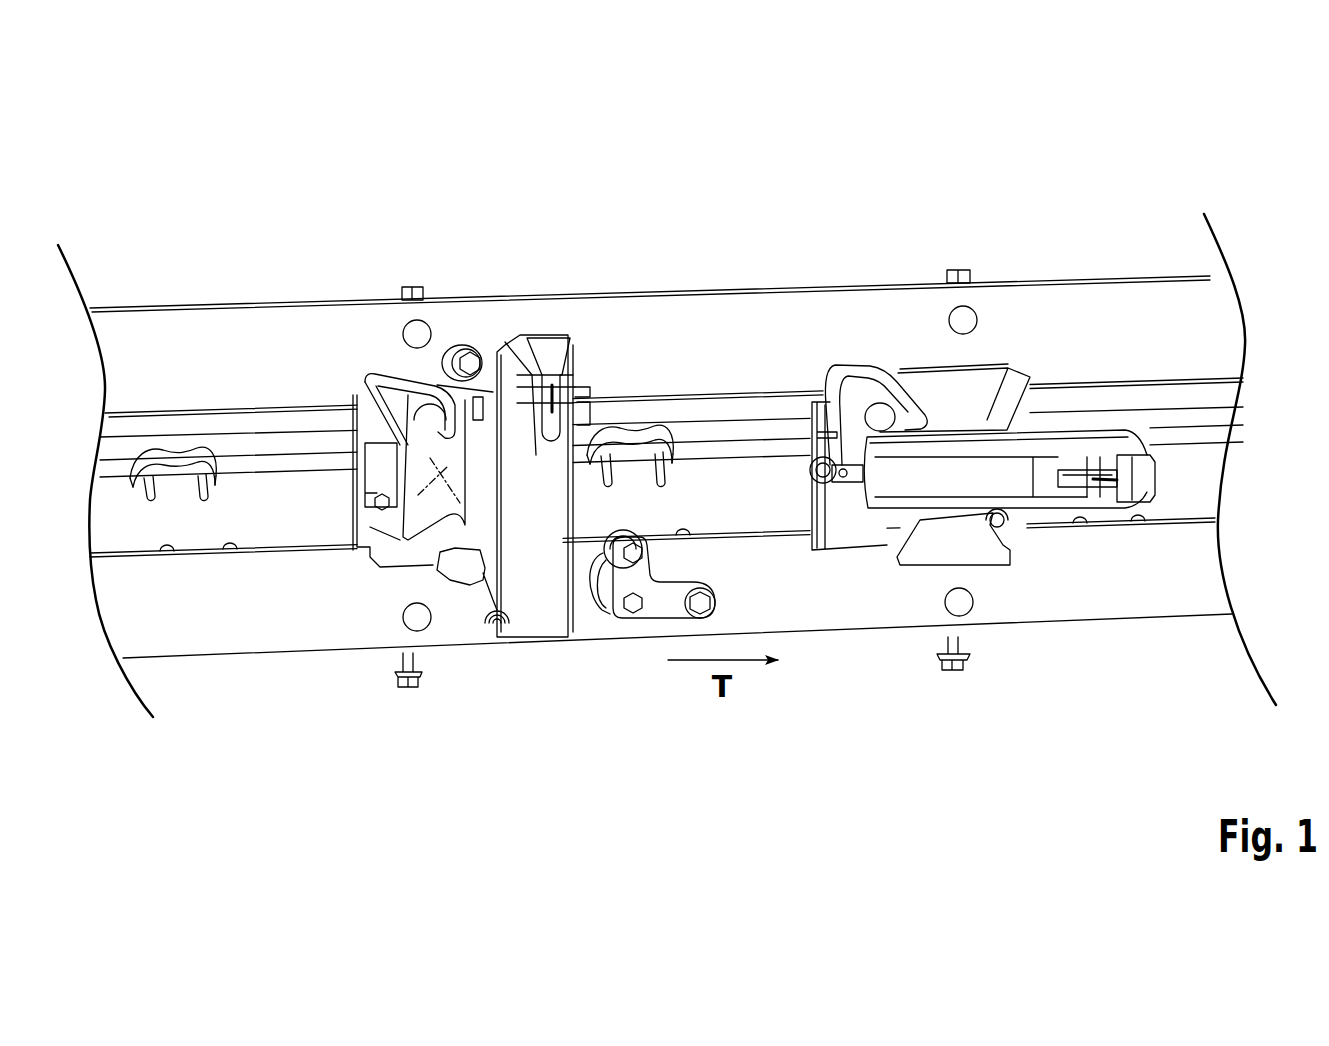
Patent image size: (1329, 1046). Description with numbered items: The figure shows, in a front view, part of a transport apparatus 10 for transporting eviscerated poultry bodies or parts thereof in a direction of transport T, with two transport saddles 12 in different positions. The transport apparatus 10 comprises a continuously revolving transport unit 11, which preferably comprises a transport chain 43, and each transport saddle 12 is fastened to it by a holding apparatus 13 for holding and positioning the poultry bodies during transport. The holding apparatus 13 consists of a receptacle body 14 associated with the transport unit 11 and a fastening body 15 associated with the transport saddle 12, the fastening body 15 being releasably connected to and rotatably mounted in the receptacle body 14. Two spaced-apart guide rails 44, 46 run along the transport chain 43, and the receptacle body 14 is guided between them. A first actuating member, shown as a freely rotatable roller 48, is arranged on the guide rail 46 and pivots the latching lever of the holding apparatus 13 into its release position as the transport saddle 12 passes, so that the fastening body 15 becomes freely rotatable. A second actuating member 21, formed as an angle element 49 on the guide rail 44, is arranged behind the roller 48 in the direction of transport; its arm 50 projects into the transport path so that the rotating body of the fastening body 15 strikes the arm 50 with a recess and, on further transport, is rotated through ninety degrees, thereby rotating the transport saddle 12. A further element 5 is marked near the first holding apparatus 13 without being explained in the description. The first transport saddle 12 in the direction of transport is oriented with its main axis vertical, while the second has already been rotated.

The transport apparatus 10 is at (980, 147).
The transport unit 11 is at (268, 418).
The transport saddle 12 is at (470, 613).
The holding apparatus 13 is at (461, 340).
The receptacle body 14 is at (358, 418).
The fastening body 15 is at (447, 572).
The second actuating member 21 is at (672, 603).
The transport chain 43 is at (238, 448).
The guide rail 44 is at (1098, 622).
The guide rail 46 is at (1010, 298).
The roller 48 is at (480, 338).
The angle element 49 is at (628, 625).
The arm 50 is at (607, 555).
The axis 5 is at (434, 467).